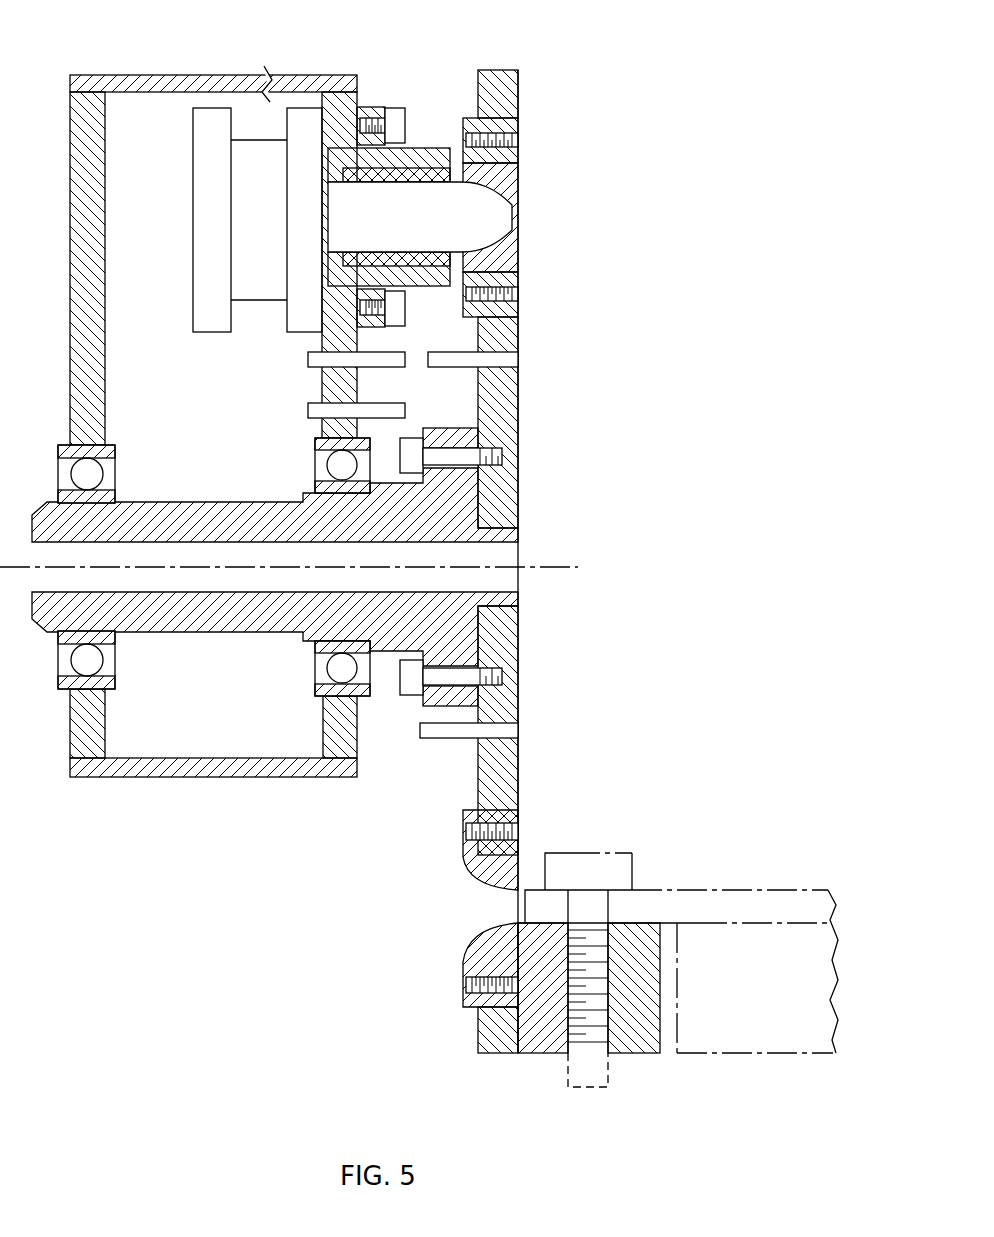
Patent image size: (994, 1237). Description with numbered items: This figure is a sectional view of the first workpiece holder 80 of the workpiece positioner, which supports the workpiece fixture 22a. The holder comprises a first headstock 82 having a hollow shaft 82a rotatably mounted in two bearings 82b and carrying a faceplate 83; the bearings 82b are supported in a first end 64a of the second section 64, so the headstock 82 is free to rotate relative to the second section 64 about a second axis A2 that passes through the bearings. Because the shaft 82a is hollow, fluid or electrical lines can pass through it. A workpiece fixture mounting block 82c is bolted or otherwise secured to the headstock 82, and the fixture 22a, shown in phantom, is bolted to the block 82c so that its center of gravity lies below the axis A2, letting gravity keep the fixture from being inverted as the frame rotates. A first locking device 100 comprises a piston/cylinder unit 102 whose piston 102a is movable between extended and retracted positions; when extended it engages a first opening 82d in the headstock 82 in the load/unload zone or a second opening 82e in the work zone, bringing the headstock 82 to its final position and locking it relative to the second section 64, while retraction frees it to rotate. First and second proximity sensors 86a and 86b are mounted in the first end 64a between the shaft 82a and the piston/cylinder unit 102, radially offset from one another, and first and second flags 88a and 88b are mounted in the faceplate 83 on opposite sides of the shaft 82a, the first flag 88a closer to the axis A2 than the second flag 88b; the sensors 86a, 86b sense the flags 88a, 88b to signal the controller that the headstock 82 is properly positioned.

The first locking device 100 is at (274, 170).
The piston/cylinder unit 102 is at (300, 157).
The piston 102a is at (428, 196).
The first opening 82d is at (520, 215).
The first workpiece holder 80 is at (330, 587).
The second flag 88b is at (515, 362).
The second proximity sensor 86b is at (308, 358).
The first proximity sensor 86a is at (308, 410).
The first headstock 82 is at (498, 482).
The hollow shaft 82a is at (490, 656).
The second axis A2 is at (578, 567).
The bearings 82b is at (113, 676).
The first flag 88a is at (436, 739).
The faceplate 83 is at (510, 786).
The first end of the second section 64a is at (110, 777).
The second section 64 is at (214, 778).
The workpiece fixture 22a is at (727, 890).
The second opening 82e is at (483, 930).
The workpiece fixture mounting block 82c is at (540, 1050).